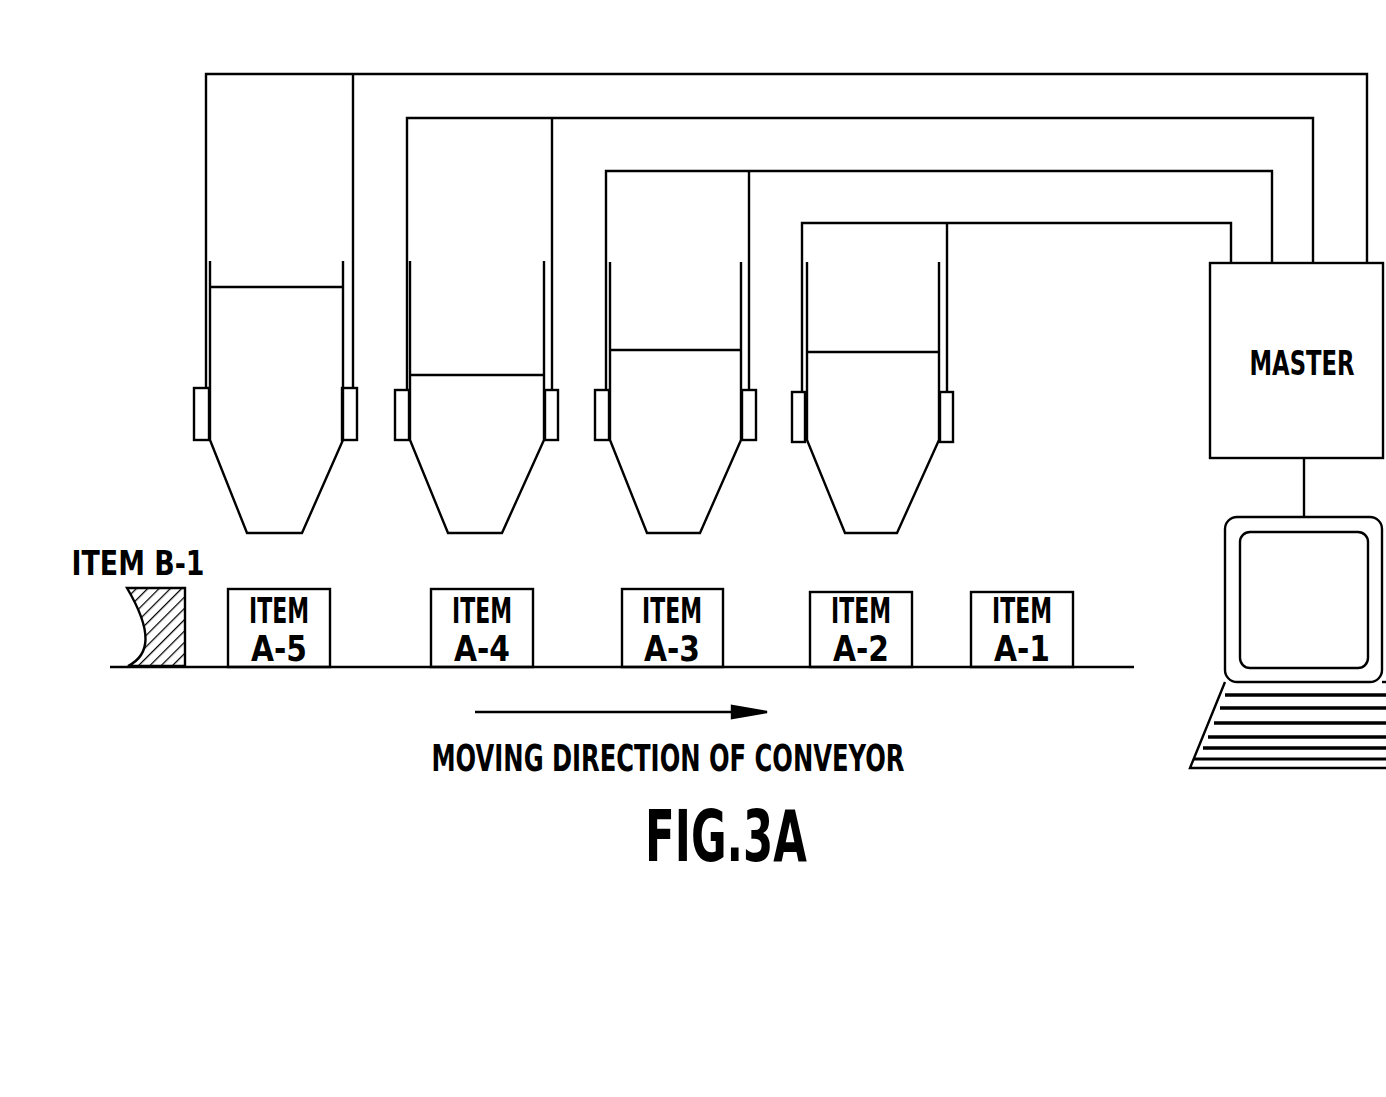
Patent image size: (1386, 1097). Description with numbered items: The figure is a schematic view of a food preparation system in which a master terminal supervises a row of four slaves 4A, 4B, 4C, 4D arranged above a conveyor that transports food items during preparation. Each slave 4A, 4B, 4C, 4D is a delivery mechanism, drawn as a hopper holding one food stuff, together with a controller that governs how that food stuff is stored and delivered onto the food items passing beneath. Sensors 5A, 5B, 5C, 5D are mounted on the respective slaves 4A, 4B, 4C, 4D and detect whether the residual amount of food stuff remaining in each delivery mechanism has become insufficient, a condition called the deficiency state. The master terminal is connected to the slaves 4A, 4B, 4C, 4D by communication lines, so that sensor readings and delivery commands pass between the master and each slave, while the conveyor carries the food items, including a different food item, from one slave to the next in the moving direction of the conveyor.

The slave 4A is at (276, 421).
The slave 4B is at (477, 421).
The slave 4C is at (675, 422).
The slave 4D is at (873, 422).
The sensor 5A is at (204, 441).
The sensor 5B is at (405, 441).
The sensor 5C is at (603, 441).
The sensor 5D is at (944, 444).